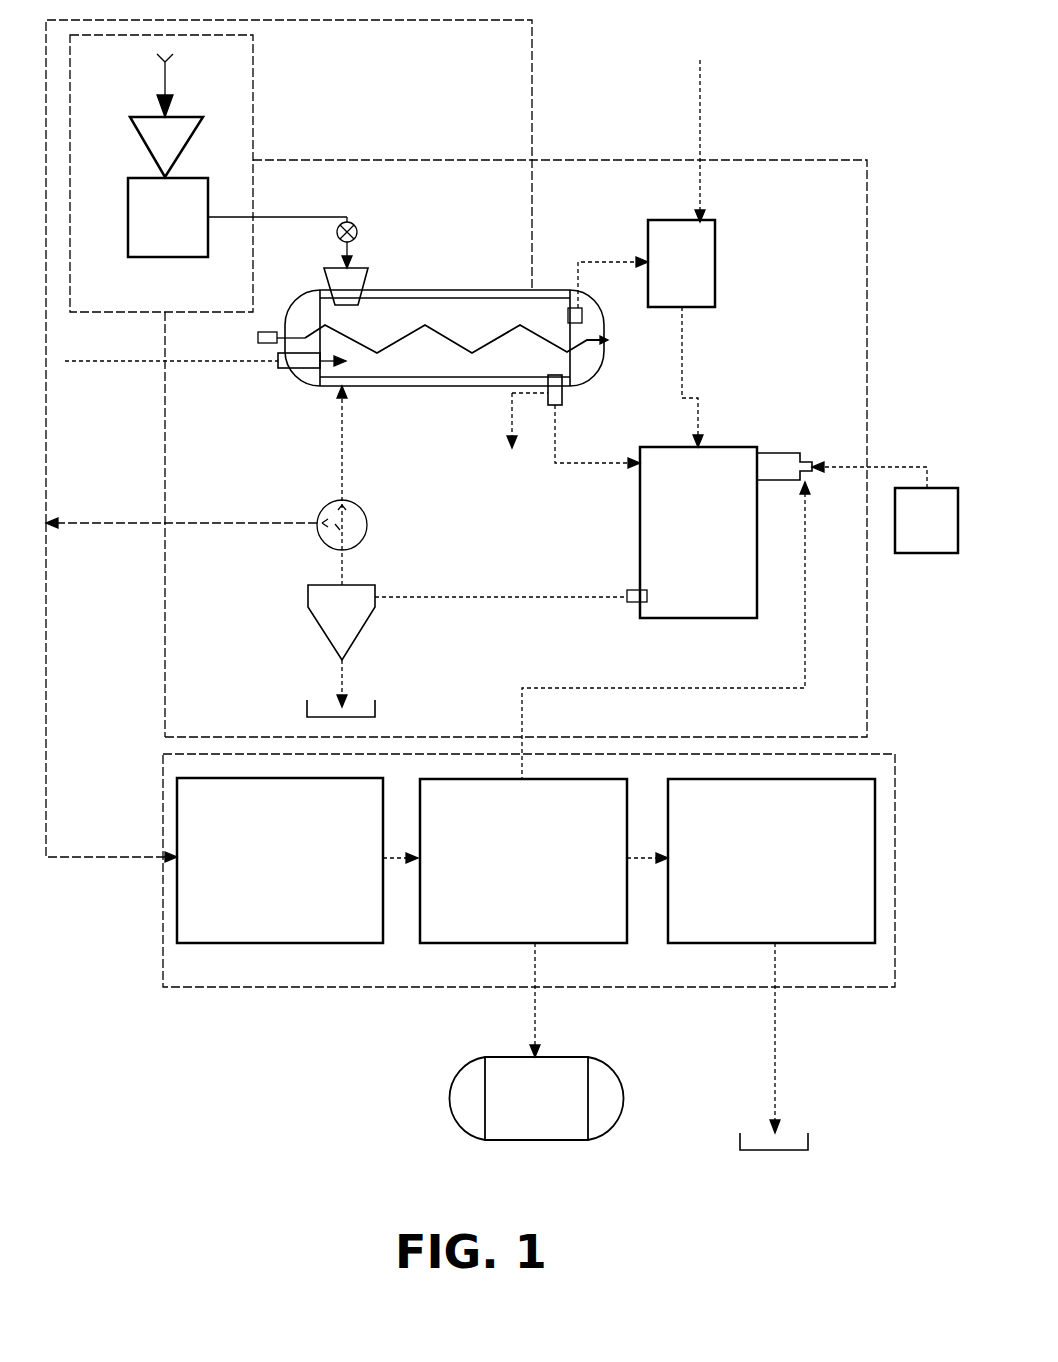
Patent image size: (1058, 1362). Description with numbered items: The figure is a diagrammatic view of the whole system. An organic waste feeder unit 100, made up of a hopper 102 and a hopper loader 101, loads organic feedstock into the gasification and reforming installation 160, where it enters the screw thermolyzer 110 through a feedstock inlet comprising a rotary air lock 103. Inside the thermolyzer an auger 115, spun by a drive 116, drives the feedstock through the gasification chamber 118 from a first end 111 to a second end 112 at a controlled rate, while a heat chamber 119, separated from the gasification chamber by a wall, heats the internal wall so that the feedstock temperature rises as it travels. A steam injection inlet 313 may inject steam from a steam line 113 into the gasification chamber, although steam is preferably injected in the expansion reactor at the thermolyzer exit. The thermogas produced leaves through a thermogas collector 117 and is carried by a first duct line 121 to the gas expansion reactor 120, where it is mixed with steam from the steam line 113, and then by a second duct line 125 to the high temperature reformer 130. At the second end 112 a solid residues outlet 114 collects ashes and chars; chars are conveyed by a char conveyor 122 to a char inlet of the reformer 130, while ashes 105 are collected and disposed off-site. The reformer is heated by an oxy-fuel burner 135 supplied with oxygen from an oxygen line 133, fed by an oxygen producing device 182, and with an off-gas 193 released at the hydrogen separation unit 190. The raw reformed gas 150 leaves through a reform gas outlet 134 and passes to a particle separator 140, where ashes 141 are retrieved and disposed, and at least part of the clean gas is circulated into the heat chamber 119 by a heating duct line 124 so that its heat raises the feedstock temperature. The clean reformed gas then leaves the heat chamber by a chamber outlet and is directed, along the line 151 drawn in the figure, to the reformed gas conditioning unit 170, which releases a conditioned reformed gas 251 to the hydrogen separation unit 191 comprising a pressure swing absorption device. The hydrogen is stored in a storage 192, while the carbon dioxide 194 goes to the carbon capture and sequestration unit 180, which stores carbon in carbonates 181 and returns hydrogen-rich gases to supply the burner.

The organic waste feeder unit 100 is at (285, 80).
The hopper loader 101 is at (166, 115).
The hopper 102 is at (237, 217).
The rotary air lock 103 is at (358, 232).
The ashes 105 is at (514, 428).
The screw thermolyzer 110 is at (451, 262).
The first end 111 is at (310, 278).
The second end 112 is at (576, 242).
The steam line 113 is at (170, 362).
The solid residues outlet 114 is at (564, 394).
The auger 115 is at (472, 353).
The drive 116 is at (258, 338).
The thermogas collector 117 is at (584, 316).
The gasification chamber 118 is at (487, 365).
The heat chamber 119 is at (447, 295).
The gas expansion reactor 120 is at (681, 263).
The first duct line 121 is at (603, 262).
The char conveyor 122 is at (608, 467).
The heating duct line 124 is at (345, 437).
The second duct line 125 is at (670, 372).
The high temperature reformer 130 is at (698, 532).
The oxygen line 133 is at (880, 467).
The reform gas outlet 134 is at (635, 604).
The oxy-fuel burner 135 is at (780, 453).
The particle separator 140 is at (341, 622).
The ashes 141 is at (346, 677).
The raw reformed gas 150 is at (545, 597).
The recycle line 151 is at (232, 522).
The gasification and reforming installation 160 is at (400, 160).
The reformed gas conditioning unit 170 is at (280, 860).
The carbon capture and sequestration unit 180 is at (771, 861).
The carbonates 181 is at (777, 1038).
The oxygen producing device 182 is at (926, 520).
The hydrogen separation unit 190 is at (163, 927).
The hydrogen separation unit 191 is at (523, 861).
The storage 192 is at (452, 1073).
The off-gas 193 is at (582, 688).
The carbon dioxide 194 is at (633, 865).
The conditioned reformed gas 251 is at (397, 862).
The steam injection inlet 313 is at (300, 370).